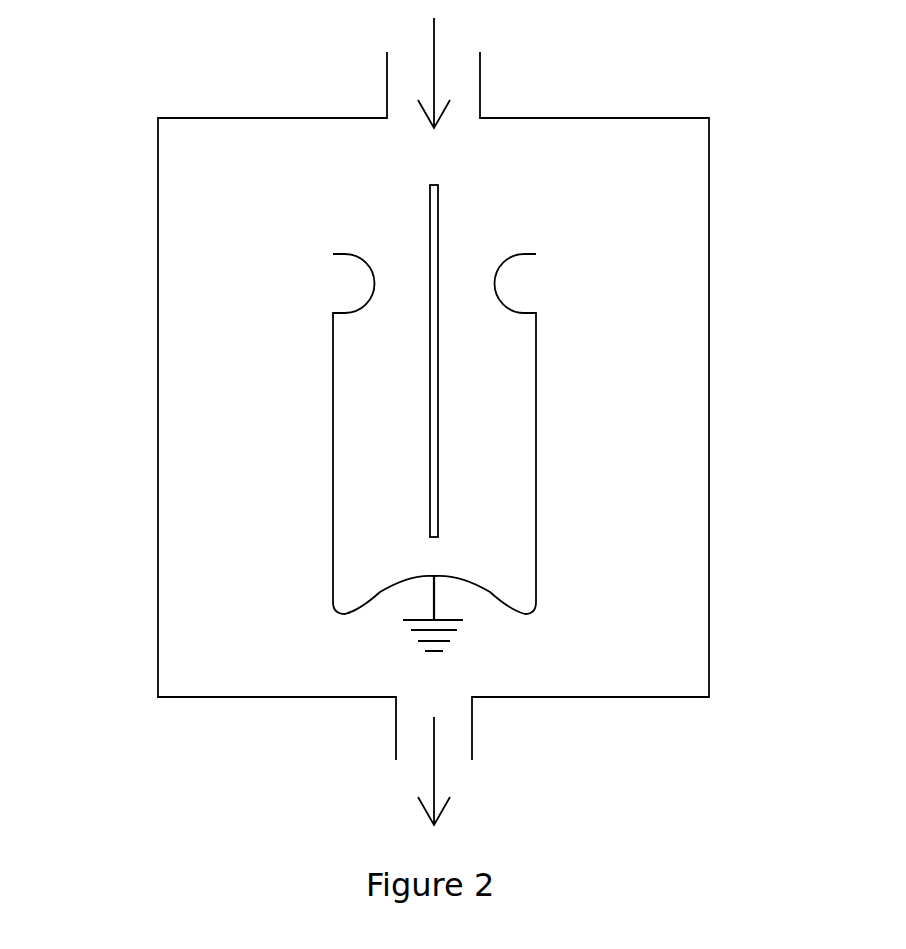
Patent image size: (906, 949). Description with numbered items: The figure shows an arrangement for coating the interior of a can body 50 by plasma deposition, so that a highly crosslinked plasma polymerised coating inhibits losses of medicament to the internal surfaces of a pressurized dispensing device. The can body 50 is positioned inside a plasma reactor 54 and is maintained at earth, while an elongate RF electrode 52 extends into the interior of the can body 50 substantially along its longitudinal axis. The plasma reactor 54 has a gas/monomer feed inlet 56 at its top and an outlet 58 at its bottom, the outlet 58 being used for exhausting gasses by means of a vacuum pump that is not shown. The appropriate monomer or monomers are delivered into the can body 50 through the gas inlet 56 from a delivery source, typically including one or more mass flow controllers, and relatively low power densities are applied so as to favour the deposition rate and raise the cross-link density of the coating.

The can body 50 is at (535, 426).
The elongate RF electrode 52 is at (438, 210).
The plasma reactor 54 is at (158, 180).
The gas/monomer feed inlet 56 is at (453, 77).
The outlet 58 is at (456, 735).